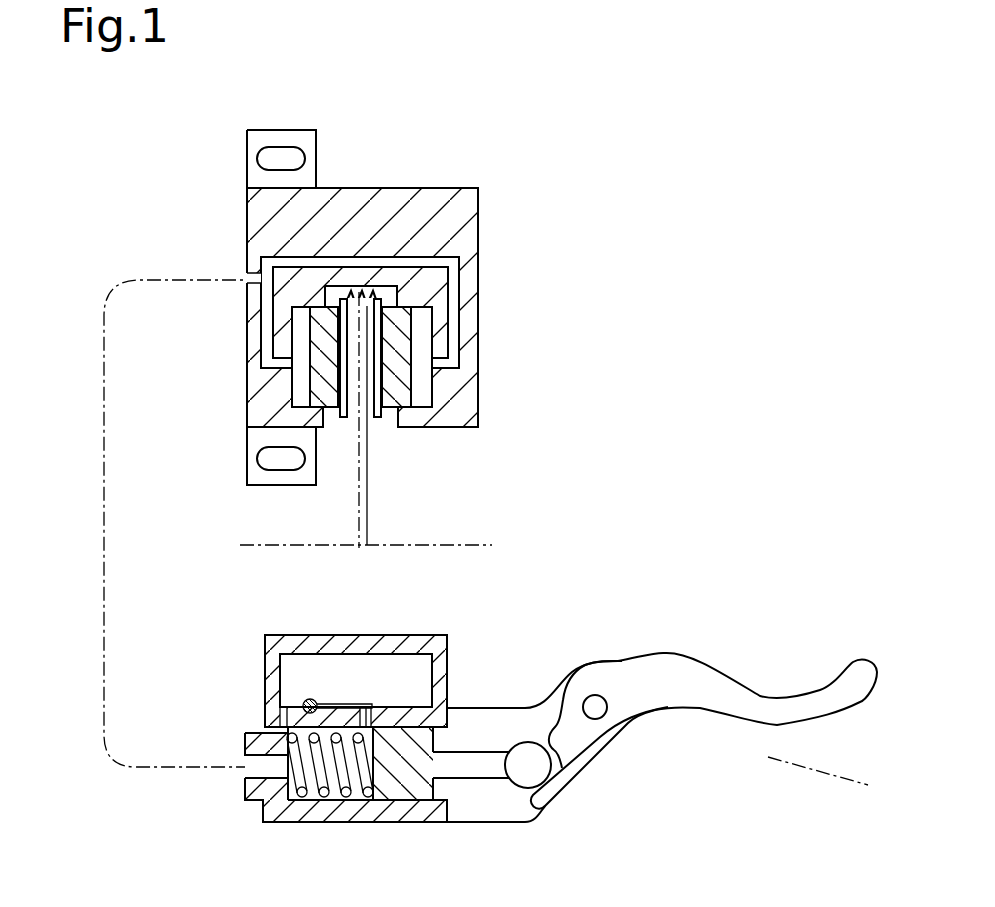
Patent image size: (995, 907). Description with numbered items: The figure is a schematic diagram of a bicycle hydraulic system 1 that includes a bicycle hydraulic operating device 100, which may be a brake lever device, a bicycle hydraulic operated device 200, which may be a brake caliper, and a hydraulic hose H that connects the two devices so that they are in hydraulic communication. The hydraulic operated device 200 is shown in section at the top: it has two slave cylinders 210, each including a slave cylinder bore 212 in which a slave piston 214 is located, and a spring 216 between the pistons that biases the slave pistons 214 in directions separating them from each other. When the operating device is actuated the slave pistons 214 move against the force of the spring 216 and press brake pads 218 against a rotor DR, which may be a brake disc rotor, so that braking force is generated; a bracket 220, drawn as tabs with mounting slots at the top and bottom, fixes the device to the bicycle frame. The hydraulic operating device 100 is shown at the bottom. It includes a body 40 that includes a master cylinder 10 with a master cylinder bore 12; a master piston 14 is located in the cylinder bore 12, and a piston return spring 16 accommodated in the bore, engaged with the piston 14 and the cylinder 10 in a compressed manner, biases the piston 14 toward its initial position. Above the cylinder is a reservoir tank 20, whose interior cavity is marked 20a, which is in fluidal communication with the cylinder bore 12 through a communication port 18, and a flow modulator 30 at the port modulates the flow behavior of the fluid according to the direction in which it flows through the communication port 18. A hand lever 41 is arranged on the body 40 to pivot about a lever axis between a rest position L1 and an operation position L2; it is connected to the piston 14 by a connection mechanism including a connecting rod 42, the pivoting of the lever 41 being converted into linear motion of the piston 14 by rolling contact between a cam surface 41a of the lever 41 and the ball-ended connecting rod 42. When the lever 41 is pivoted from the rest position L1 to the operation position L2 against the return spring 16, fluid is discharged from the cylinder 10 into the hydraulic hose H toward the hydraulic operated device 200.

The bicycle hydraulic system 1 is at (152, 122).
The hydraulic hose H is at (102, 624).
The bicycle hydraulic operated device 200 is at (496, 178).
The slave cylinder 210 is at (268, 427).
The bracket 220 is at (258, 178).
The slave cylinder bore 212 is at (293, 383).
The slave piston 214 is at (318, 333).
The spring 216 is at (388, 293).
The brake pad 218 is at (344, 418).
The rotor DR is at (381, 525).
The bicycle hydraulic operating device 100 is at (584, 607).
The body 40 is at (202, 705).
The reservoir tank 20 is at (274, 690).
The housing cavity 20a is at (424, 692).
The flow modulator 30 is at (346, 664).
The communication port 18 is at (365, 728).
The master cylinder 10 is at (282, 810).
The master piston 14 is at (418, 796).
The master cylinder bore 12 is at (307, 767).
The piston return spring 16 is at (330, 798).
The connecting rod 42 is at (488, 768).
The hand lever 41 is at (662, 737).
The cam surface 41a is at (558, 752).
The rest position L1 is at (863, 663).
The operation position L2 is at (852, 718).